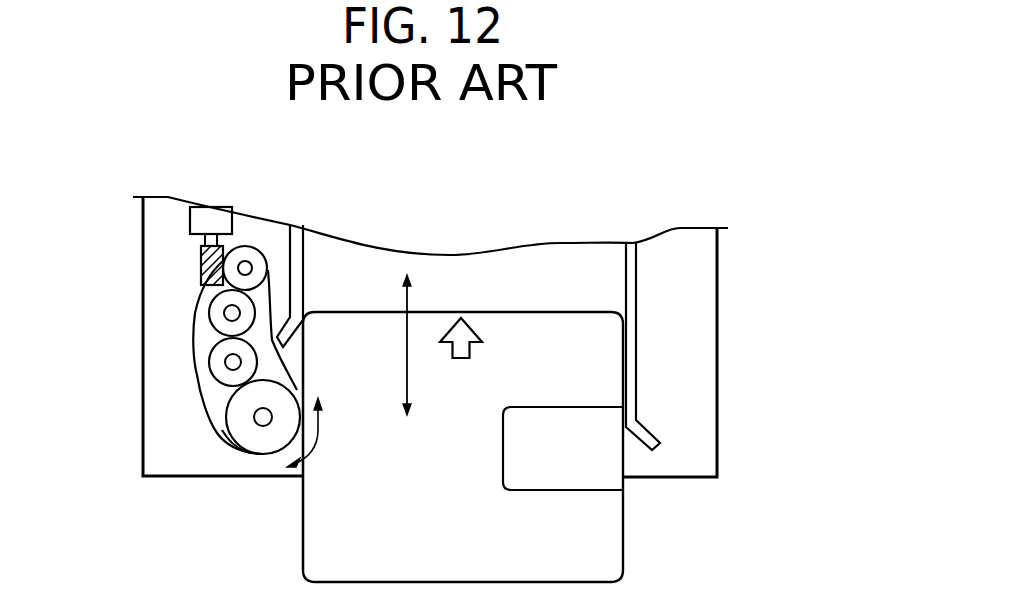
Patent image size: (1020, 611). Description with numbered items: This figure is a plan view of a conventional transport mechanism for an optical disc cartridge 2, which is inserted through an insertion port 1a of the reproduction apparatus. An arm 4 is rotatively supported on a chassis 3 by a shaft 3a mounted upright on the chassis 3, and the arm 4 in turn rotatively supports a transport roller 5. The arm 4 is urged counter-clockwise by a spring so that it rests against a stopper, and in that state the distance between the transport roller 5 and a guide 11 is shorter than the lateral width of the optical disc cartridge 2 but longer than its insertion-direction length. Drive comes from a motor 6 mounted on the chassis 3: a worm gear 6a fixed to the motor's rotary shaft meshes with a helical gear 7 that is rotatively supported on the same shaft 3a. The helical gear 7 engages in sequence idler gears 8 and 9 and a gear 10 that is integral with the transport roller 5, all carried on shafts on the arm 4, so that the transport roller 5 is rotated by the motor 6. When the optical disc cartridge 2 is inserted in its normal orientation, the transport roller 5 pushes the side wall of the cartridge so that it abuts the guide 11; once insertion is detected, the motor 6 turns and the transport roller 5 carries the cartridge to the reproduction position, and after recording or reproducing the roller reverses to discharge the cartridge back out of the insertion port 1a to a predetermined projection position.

The insertion port 1a is at (476, 328).
The optical disc cartridge 2 is at (617, 553).
The chassis 3 is at (692, 462).
The shaft 3a is at (257, 262).
The arm 4 is at (230, 393).
The transport roller 5 is at (214, 427).
The motor 6 is at (190, 222).
The worm gear 6a is at (201, 265).
The helical gear 7 is at (246, 262).
The idler gear 8 is at (210, 320).
The idler gear 9 is at (210, 377).
The gear 10 is at (234, 447).
The guide 11 is at (636, 322).